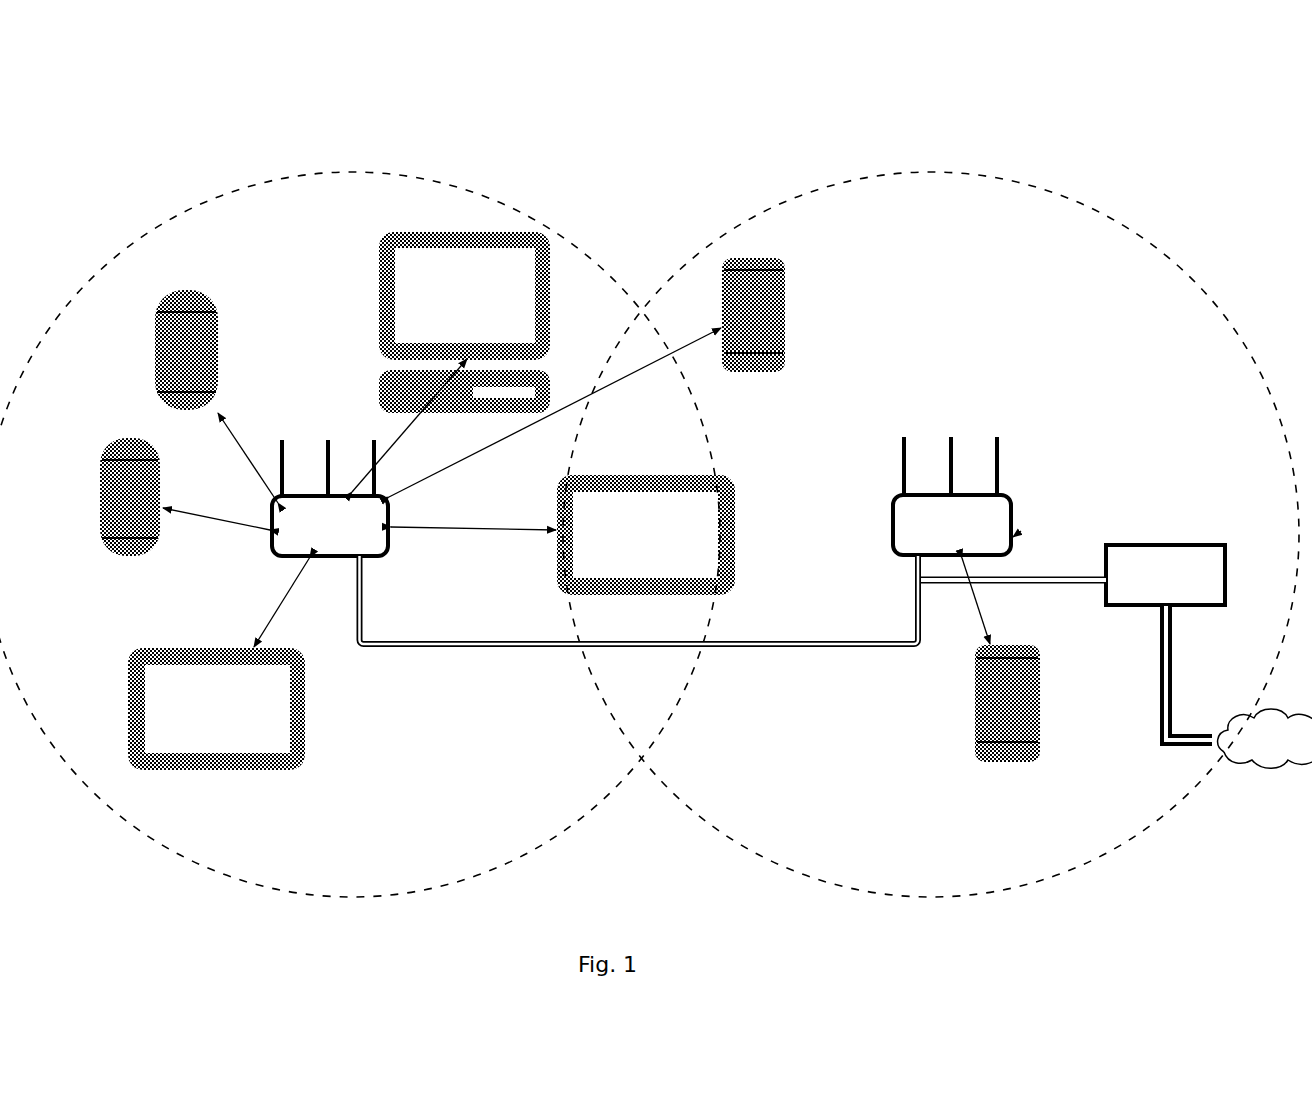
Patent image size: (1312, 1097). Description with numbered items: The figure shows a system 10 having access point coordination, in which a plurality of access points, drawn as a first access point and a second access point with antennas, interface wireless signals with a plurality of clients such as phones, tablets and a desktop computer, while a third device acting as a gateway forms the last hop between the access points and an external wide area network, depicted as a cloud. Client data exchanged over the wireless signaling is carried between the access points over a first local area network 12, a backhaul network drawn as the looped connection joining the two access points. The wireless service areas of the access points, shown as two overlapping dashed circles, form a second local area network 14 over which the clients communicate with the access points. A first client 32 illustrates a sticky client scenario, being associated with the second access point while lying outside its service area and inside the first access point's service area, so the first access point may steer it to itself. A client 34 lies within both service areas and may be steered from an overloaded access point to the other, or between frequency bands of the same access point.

The system 10 is at (1150, 101).
The first local area network 12 is at (776, 638).
The second local area network 14 is at (689, 249).
The first client 32 is at (787, 318).
The client 34 is at (735, 498).